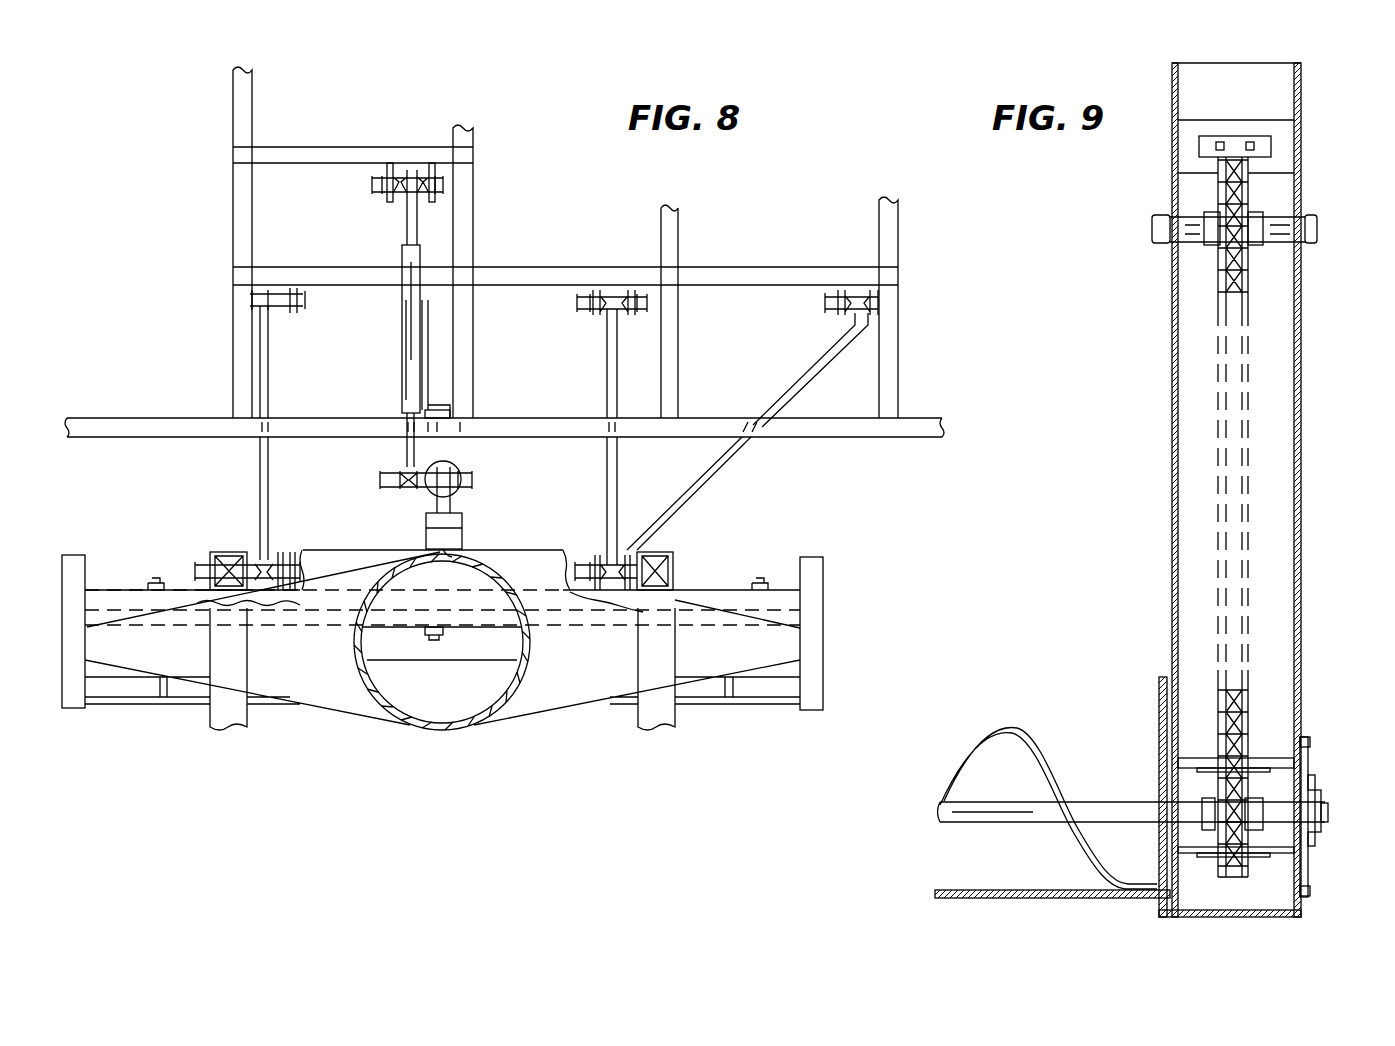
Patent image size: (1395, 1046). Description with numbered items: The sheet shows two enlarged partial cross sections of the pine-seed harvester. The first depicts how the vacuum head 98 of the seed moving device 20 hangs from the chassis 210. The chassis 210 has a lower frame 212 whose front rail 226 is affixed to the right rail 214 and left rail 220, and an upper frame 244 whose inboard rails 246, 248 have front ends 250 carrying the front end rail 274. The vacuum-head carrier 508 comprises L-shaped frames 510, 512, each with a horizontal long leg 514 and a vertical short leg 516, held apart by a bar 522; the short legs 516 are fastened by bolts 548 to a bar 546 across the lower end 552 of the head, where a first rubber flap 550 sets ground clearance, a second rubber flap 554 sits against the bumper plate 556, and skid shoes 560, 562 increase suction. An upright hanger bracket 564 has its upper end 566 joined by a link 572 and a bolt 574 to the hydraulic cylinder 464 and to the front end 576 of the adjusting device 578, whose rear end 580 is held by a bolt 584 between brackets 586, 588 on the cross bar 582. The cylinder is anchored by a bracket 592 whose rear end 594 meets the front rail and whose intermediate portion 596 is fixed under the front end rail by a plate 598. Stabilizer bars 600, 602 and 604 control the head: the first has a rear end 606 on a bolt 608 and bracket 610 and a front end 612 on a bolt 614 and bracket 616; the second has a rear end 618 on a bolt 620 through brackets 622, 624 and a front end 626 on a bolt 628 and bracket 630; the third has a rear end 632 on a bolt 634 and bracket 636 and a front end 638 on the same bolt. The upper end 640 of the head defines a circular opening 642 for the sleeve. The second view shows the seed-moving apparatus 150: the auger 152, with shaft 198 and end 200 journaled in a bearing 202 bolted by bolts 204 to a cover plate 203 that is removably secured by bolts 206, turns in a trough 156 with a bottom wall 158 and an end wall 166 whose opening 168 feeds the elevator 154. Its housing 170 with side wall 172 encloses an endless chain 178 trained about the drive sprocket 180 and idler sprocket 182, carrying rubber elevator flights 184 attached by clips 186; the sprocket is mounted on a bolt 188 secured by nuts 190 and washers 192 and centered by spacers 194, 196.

In FIG. 8, the seed moving device 20 is at (475, 734).
In FIG. 8, the vacuum head 98 is at (340, 696).
In FIG. 9, the seed-moving apparatus 150 is at (1312, 667).
In FIG. 9, the auger 152 is at (945, 812).
In FIG. 9, the elevator 154 is at (1307, 336).
In FIG. 9, the trough 156 is at (1046, 893).
In FIG. 9, the bottom wall 158 is at (988, 898).
In FIG. 9, the end wall 166 is at (1162, 718).
In FIG. 9, the opening 168 is at (1160, 755).
In FIG. 9, the housing 170 is at (1302, 386).
In FIG. 9, the side wall 172 is at (1301, 690).
In FIG. 9, the endless chain 178 is at (1243, 703).
In FIG. 9, the drive sprocket 180 is at (1204, 798).
In FIG. 9, the idler sprocket 182 is at (1256, 212).
In FIG. 9, the rubber elevator flights 184 is at (1187, 856).
In FIG. 9, the clips 186 is at (1252, 136).
In FIG. 9, the bolt 188 is at (1153, 233).
In FIG. 9, the nuts 190 is at (1152, 225).
In FIG. 9, the washers 192 is at (1166, 212).
In FIG. 9, the spacer 194 is at (1192, 245).
In FIG. 9, the spacer 196 is at (1283, 245).
In FIG. 9, the shaft 198 is at (1035, 823).
In FIG. 9, the end 200 is at (1326, 823).
In FIG. 9, the bearing 202 is at (1319, 801).
In FIG. 9, the cover plate 203 is at (1309, 758).
In FIG. 9, the bolts 204 is at (1313, 780).
In FIG. 9, the bolts 206 is at (1310, 737).
In FIG. 8, the chassis 210 is at (743, 188).
In FIG. 8, the lower frame 212 is at (800, 260).
In FIG. 8, the right rail 214 is at (233, 232).
In FIG. 8, the left rail 220 is at (899, 292).
In FIG. 8, the front rail 226 is at (328, 267).
In FIG. 8, the upper frame 244 is at (880, 438).
In FIG. 8, the rail 246 is at (679, 340).
In FIG. 8, the rail 248 is at (474, 340).
In FIG. 8, the front ends 250 is at (476, 388).
In FIG. 8, the front end rail 274 is at (926, 418).
In FIG. 8, the hydraulic cylinder 464 is at (454, 468).
In FIG. 8, the vacuum-head carrier 508 is at (656, 722).
In FIG. 8, the L-shaped frame 510 is at (683, 651).
In FIG. 8, the L-shaped frame 512 is at (255, 681).
In FIG. 8, the long leg 514 is at (241, 645).
In FIG. 8, the short leg 516 is at (221, 552).
In FIG. 8, the bar 522 is at (324, 554).
In FIG. 8, the bar 546 is at (724, 575).
In FIG. 8, the bolts 548 is at (153, 582).
In FIG. 8, the first rubber flap 550 is at (103, 609).
In FIG. 8, the lower end 552 is at (445, 634).
In FIG. 8, the second rubber flap 554 is at (790, 672).
In FIG. 8, the bumper plate 556 is at (760, 705).
In FIG. 8, the skid shoe 560 is at (823, 580).
In FIG. 8, the skid shoe 562 is at (75, 708).
In FIG. 8, the hanger bracket 564 is at (464, 535).
In FIG. 8, the upper end 566 is at (418, 579).
In FIG. 8, the link 572 is at (445, 500).
In FIG. 8, the bolt 574 is at (382, 479).
In FIG. 8, the front end 576 is at (410, 445).
In FIG. 8, the adjusting device 578 is at (398, 348).
In FIG. 8, the rear end 580 is at (408, 212).
In FIG. 8, the cross bar 582 is at (326, 147).
In FIG. 8, the bolt 584 is at (444, 185).
In FIG. 8, the bracket 586 is at (386, 172).
In FIG. 8, the bracket 588 is at (437, 168).
In FIG. 8, the bracket 592 is at (455, 318).
In FIG. 8, the rear end 594 is at (428, 288).
In FIG. 8, the intermediate portion 596 is at (428, 413).
In FIG. 8, the plate 598 is at (428, 410).
In FIG. 8, the stabilizer bar 600 is at (268, 398).
In FIG. 8, the stabilizer bar 602 is at (607, 413).
In FIG. 8, the stabilizer bar 604 is at (779, 404).
In FIG. 8, the rear end 606 is at (268, 345).
In FIG. 8, the bolt 608 is at (304, 300).
In FIG. 8, the bracket 610 is at (288, 312).
In FIG. 8, the front end 612 is at (268, 522).
In FIG. 8, the bolt 614 is at (301, 565).
In FIG. 8, the bracket 616 is at (284, 560).
In FIG. 8, the rear end 618 is at (607, 340).
In FIG. 8, the bolt 620 is at (648, 303).
In FIG. 8, the bracket 622 is at (583, 290).
In FIG. 8, the bracket 624 is at (628, 290).
In FIG. 8, the front end 626 is at (607, 488).
In FIG. 8, the bolt 628 is at (680, 552).
In FIG. 8, the bracket 630 is at (590, 552).
In FIG. 8, the rear end 632 is at (823, 345).
In FIG. 8, the bolt 634 is at (826, 292).
In FIG. 8, the bracket 636 is at (838, 312).
In FIG. 8, the front end 638 is at (680, 486).
In FIG. 8, the upper end 640 is at (515, 690).
In FIG. 8, the circular opening 642 is at (430, 727).